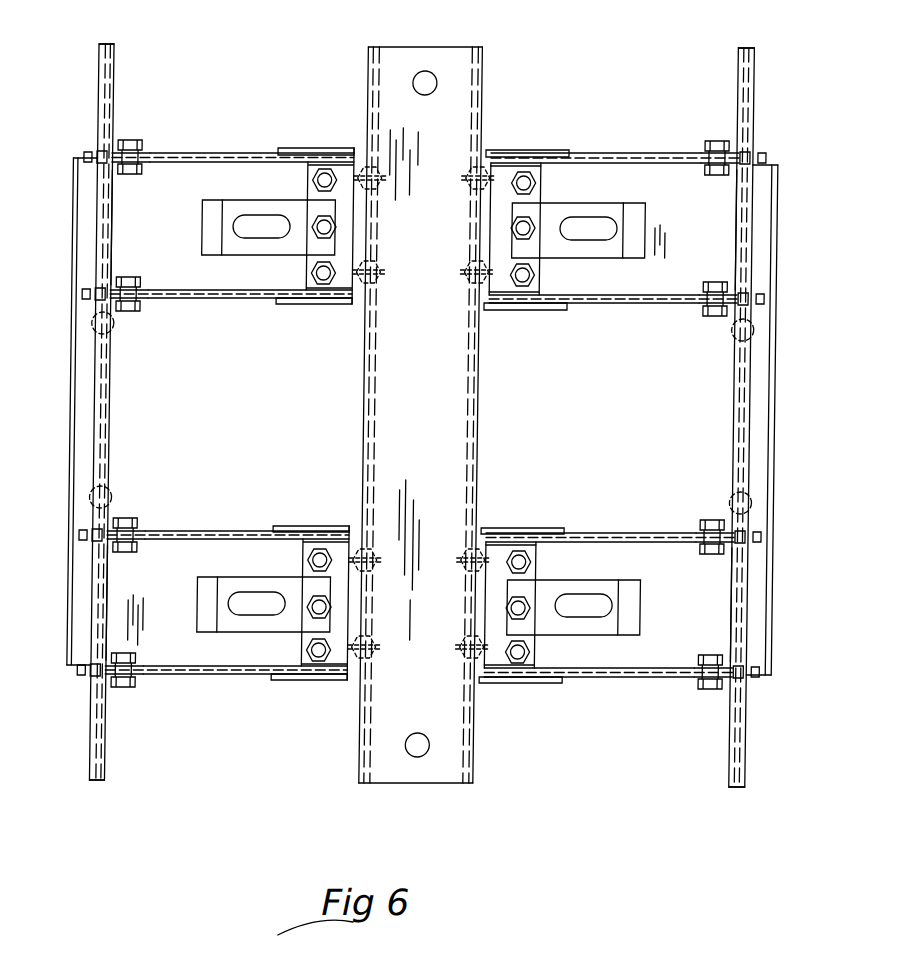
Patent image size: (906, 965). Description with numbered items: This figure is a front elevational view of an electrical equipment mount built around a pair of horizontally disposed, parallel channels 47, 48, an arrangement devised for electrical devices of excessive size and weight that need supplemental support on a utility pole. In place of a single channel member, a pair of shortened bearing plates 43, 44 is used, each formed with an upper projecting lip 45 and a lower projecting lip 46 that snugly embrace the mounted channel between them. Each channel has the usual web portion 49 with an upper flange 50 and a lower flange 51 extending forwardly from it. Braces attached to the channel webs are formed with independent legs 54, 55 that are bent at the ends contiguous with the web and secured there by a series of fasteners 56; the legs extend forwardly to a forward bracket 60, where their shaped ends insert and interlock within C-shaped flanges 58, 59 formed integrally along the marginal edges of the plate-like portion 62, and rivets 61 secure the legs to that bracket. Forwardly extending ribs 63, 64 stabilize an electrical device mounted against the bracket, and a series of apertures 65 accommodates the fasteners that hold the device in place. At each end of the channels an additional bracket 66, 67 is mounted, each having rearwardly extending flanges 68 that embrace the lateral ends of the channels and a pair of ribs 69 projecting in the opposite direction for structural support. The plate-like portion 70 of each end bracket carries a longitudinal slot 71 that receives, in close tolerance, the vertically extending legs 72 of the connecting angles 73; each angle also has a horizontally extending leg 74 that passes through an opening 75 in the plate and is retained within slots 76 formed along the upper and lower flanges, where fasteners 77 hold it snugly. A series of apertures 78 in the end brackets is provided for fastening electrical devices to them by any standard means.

The bearing plate 43 is at (575, 151).
The bearing plate 44 is at (577, 533).
The upper projecting lip 45 is at (515, 150).
The lower projecting lip 46 is at (549, 308).
The channel 47 is at (222, 152).
The channel 48 is at (217, 530).
The web portion 49 is at (648, 172).
The upper flange 50 is at (610, 160).
The lower flange 51 is at (639, 300).
The brace leg 54 is at (342, 172).
The brace leg 55 is at (509, 300).
The fastener 56 is at (316, 275).
The C-shaped flange 58 is at (370, 347).
The C-shaped flange 59 is at (484, 378).
The forward bracket 60 is at (434, 47).
The rivet 61 is at (466, 195).
The plate-like portion 62 is at (414, 322).
The rib 63 is at (370, 387).
The rib 64 is at (486, 425).
The aperture 65 is at (438, 90).
The bracket 66 is at (72, 160).
The bracket 67 is at (781, 165).
The rearwardly extending flange 68 is at (115, 212).
The rib 69 is at (78, 318).
The plate-like portion 70 is at (99, 130).
The longitudinal slot 71 is at (79, 375).
The vertically extending leg 72 is at (112, 115).
The connecting angle 73 is at (98, 160).
The horizontally extending leg 74 is at (163, 156).
The opening 75 is at (104, 290).
The slot 76 is at (172, 160).
The fastener 77 is at (135, 140).
The aperture 78 is at (116, 70).